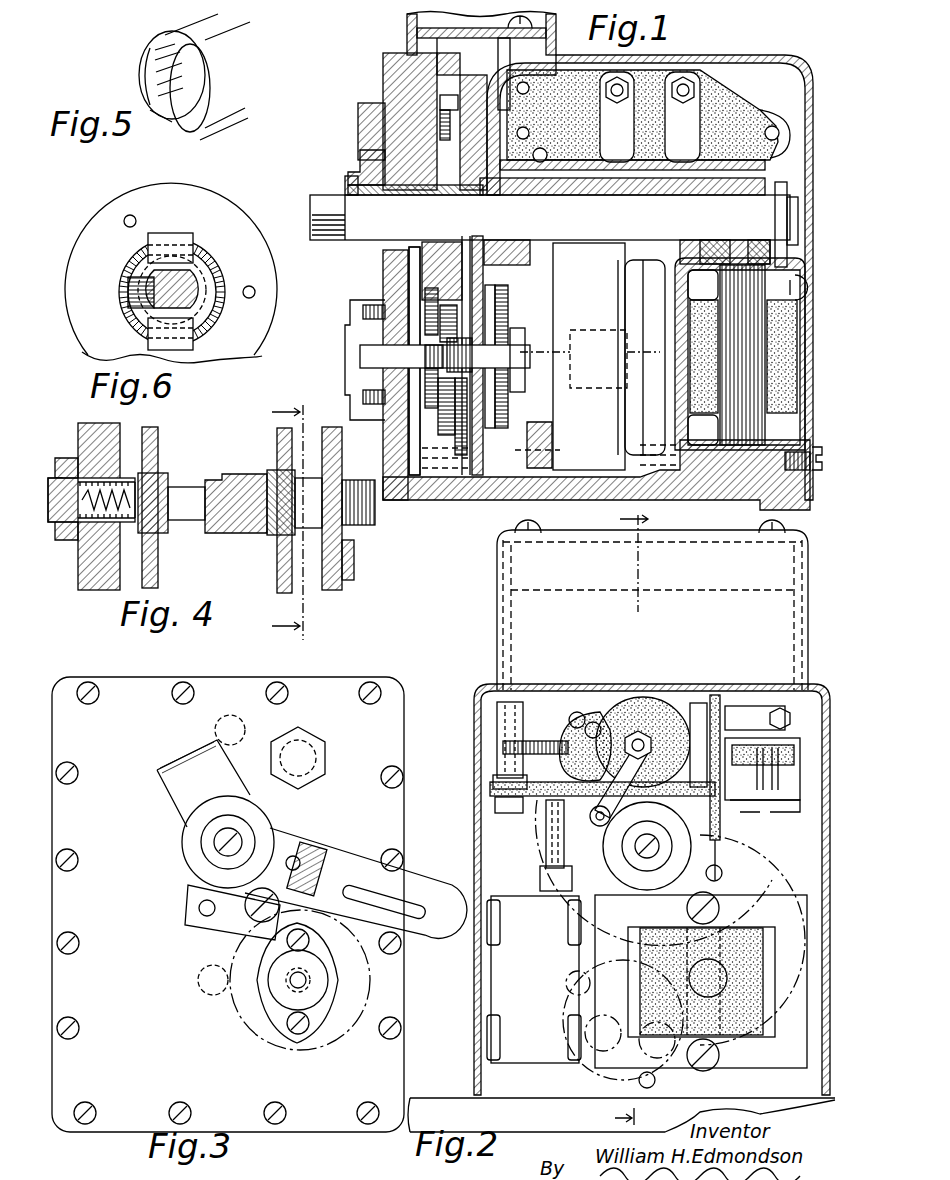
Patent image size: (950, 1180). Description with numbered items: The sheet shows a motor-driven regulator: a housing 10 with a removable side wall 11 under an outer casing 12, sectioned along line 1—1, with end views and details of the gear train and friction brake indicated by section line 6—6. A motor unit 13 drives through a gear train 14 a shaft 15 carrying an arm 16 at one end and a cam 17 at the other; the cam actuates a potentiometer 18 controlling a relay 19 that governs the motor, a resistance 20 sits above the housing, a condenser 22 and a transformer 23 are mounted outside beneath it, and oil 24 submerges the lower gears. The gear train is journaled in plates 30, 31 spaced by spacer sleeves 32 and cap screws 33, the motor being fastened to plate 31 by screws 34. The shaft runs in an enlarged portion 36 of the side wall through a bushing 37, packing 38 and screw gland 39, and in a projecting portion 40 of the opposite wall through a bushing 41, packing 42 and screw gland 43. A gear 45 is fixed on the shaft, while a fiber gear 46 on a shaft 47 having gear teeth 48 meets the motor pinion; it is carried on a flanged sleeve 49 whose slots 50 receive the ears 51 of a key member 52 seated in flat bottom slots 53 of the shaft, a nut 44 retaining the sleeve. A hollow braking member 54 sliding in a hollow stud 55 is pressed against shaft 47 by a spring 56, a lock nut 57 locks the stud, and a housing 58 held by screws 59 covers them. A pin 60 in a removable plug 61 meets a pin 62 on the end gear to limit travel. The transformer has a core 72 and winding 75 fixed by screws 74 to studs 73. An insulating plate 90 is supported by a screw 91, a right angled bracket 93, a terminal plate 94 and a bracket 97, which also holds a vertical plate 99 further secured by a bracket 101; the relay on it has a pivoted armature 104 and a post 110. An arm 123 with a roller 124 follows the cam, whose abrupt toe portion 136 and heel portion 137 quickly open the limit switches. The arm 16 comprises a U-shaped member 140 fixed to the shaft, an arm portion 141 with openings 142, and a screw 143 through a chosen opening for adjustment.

In FIG. 2, the section line 1— 1 is at (636, 817).
In FIG. 4, the section line 6— 6 is at (287, 517).
In FIG. 1, the housing 10 is at (480, 497).
In FIG. 1, the removable side wall 11 is at (385, 265).
In FIG. 4, the removable side wall 11 is at (90, 572).
In FIG. 1, the outer casing 12 is at (738, 60).
In FIG. 1, the motor unit 13 is at (592, 356).
In FIG. 1, the gear train 14 is at (412, 244).
In FIG. 1, the shaft 15 is at (550, 217).
In FIG. 3, the arm 16 is at (300, 860).
In FIG. 1, the cam 17 is at (782, 184).
In FIG. 2, the cam 17 is at (600, 848).
In FIG. 2, the potentiometer 18 is at (529, 703).
In FIG. 2, the relay 19 is at (795, 812).
In FIG. 1, the resistance 20 is at (340, 359).
In FIG. 2, the condenser 22 is at (534, 979).
In FIG. 1, the transformer 23 is at (780, 304).
In FIG. 2, the transformer 23 is at (742, 881).
In FIG. 1, the oil 24 is at (540, 482).
In FIG. 1, the plate 30 is at (409, 424).
In FIG. 4, the plate 30 is at (158, 442).
In FIG. 1, the plate 31 is at (474, 240).
In FIG. 4, the plate 31 is at (278, 440).
In FIG. 1, the spacer sleeves 32 is at (478, 268).
In FIG. 1, the cap screws 33 is at (470, 305).
In FIG. 1, the screws 34 is at (508, 246).
In FIG. 1, the enlarged portion 36 is at (360, 168).
In FIG. 1, the bushing 37 is at (425, 242).
In FIG. 1, the packing 38 is at (375, 196).
In FIG. 1, the screw gland 39 is at (347, 190).
In FIG. 1, the projecting portion 40 is at (692, 262).
In FIG. 1, the bushing 41 is at (710, 242).
In FIG. 1, the packing 42 is at (738, 196).
In FIG. 1, the screw gland 43 is at (752, 246).
In FIG. 4, the nut 44 is at (360, 480).
In FIG. 1, the gear 45 is at (460, 150).
In FIG. 1, the fiber gear 46 is at (510, 322).
In FIG. 4, the fiber gear 46 is at (345, 580).
In FIG. 4, the shaft 47 is at (185, 488).
In FIG. 4, the gear teeth 48 is at (240, 476).
In FIG. 6, the flanged sleeve 49 is at (244, 203).
In FIG. 4, the flanged sleeve 49 is at (345, 545).
In FIG. 5, the slots 50 is at (205, 75).
In FIG. 6, the slots 50 is at (148, 250).
In FIG. 6, the ears 51 is at (195, 238).
In FIG. 4, the ears 51 is at (290, 536).
In FIG. 6, the key member 52 is at (215, 302).
In FIG. 6, the flat bottom slots 53 is at (200, 270).
In FIG. 4, the hollow braking member 54 is at (138, 524).
In FIG. 4, the hollow stud 55 is at (70, 525).
In FIG. 4, the spring 56 is at (135, 476).
In FIG. 4, the lock nut 57 is at (72, 458).
In FIG. 1, the housing 58 is at (357, 345).
In FIG. 1, the screws 59 is at (362, 403).
In FIG. 1, the pin 60 is at (440, 103).
In FIG. 1, the plug 61 is at (360, 124).
In FIG. 1, the pin 62 is at (445, 112).
In FIG. 2, the transformer core 72 is at (714, 981).
In FIG. 1, the studs 73 is at (742, 356).
In FIG. 1, the screws 74 is at (780, 447).
In FIG. 2, the winding 75 is at (765, 972).
In FIG. 2, the plate 90 is at (490, 785).
In FIG. 2, the screw 91 is at (560, 770).
In FIG. 2, the right angled bracket 93 is at (712, 836).
In FIG. 1, the terminal plate 94 is at (435, 40).
In FIG. 1, the bracket 97 is at (505, 75).
In FIG. 1, the vertical plate 99 is at (728, 102).
In FIG. 1, the bracket 101 is at (768, 128).
In FIG. 2, the bracket 101 is at (660, 710).
In FIG. 2, the pivoted armature 104 is at (755, 802).
In FIG. 2, the post 110 is at (752, 705).
In FIG. 2, the arm 123 is at (623, 774).
In FIG. 2, the roller 124 is at (598, 817).
In FIG. 2, the abrupt toe portion 136 is at (701, 981).
In FIG. 2, the abrupt heel portion 137 is at (635, 850).
In FIG. 3, the U-shaped member 140 is at (180, 762).
In FIG. 3, the arm portion 141 is at (347, 856).
In FIG. 3, the openings 142 is at (240, 935).
In FIG. 3, the screw 143 is at (262, 890).